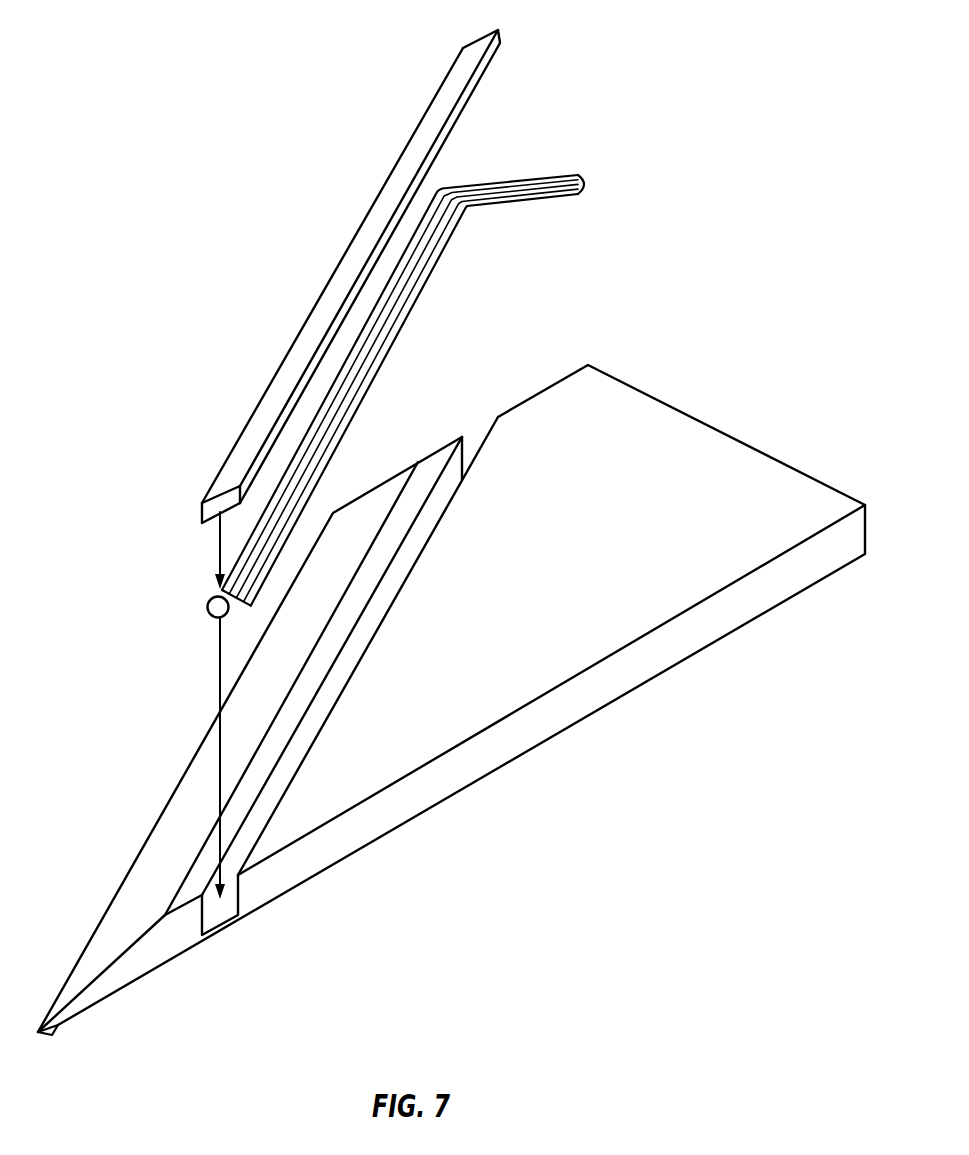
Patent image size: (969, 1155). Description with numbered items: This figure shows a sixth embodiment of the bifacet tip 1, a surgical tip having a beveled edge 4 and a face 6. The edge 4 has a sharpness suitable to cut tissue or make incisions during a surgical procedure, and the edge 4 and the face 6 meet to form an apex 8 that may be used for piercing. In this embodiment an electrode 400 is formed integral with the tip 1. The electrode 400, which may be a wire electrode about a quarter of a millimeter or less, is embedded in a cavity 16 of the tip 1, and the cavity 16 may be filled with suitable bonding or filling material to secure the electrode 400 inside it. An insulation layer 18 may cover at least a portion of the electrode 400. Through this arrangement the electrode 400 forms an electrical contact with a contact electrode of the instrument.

The bifacet tip 1 is at (158, 704).
The beveled edge 4 is at (183, 778).
The face 6 is at (575, 727).
The apex 8 is at (47, 1037).
The cavity 16 is at (222, 920).
The insulation layer 18 is at (281, 381).
The electrode 400 is at (373, 363).